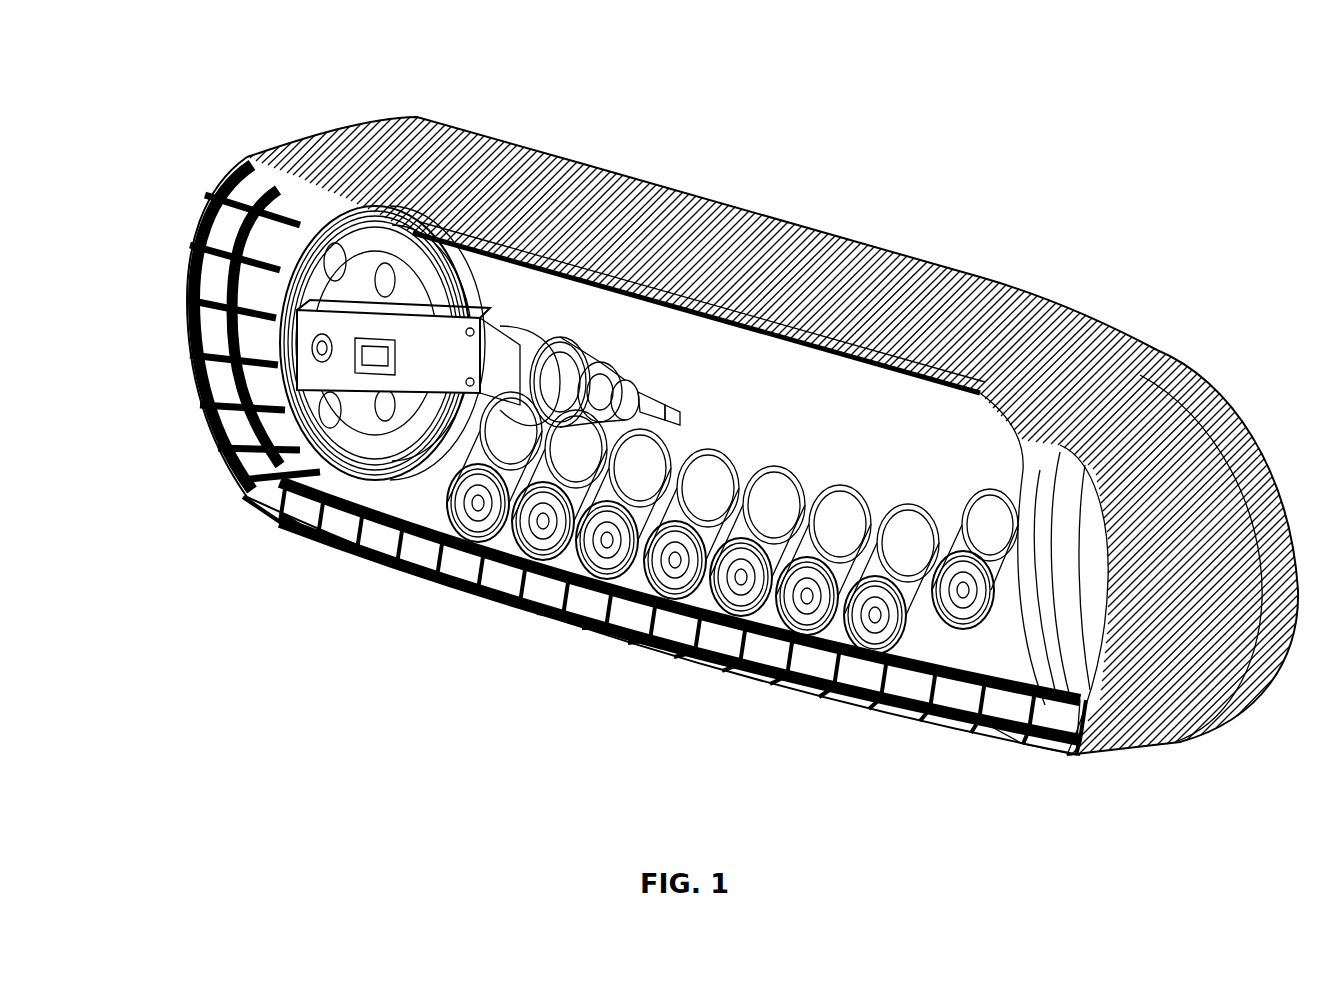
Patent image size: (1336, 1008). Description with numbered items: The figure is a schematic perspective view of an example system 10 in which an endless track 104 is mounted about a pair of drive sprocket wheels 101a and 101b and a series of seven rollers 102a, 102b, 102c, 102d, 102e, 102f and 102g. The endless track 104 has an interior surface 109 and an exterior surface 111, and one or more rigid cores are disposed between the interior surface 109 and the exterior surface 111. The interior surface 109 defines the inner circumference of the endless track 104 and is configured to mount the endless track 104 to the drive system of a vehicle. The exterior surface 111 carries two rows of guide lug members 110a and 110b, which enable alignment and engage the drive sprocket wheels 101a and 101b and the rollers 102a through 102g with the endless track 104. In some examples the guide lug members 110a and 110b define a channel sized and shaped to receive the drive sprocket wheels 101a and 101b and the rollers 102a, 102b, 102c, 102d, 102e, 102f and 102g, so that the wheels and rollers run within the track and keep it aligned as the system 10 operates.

The system 10 is at (1064, 96).
The drive sprocket wheel 101a is at (1063, 642).
The drive sprocket wheel 101b is at (276, 310).
The roller 102a is at (961, 532).
The roller 102b is at (902, 514).
The roller 102c is at (845, 493).
The roller 102d is at (776, 470).
The roller 102e is at (712, 452).
The roller 102f is at (641, 444).
The roller 102g is at (501, 434).
The endless track 104 is at (987, 254).
The interior surface 109 is at (252, 465).
The guide lug member 110a is at (941, 656).
The guide lug member 110b is at (1018, 638).
The exterior surface 111 is at (1162, 357).